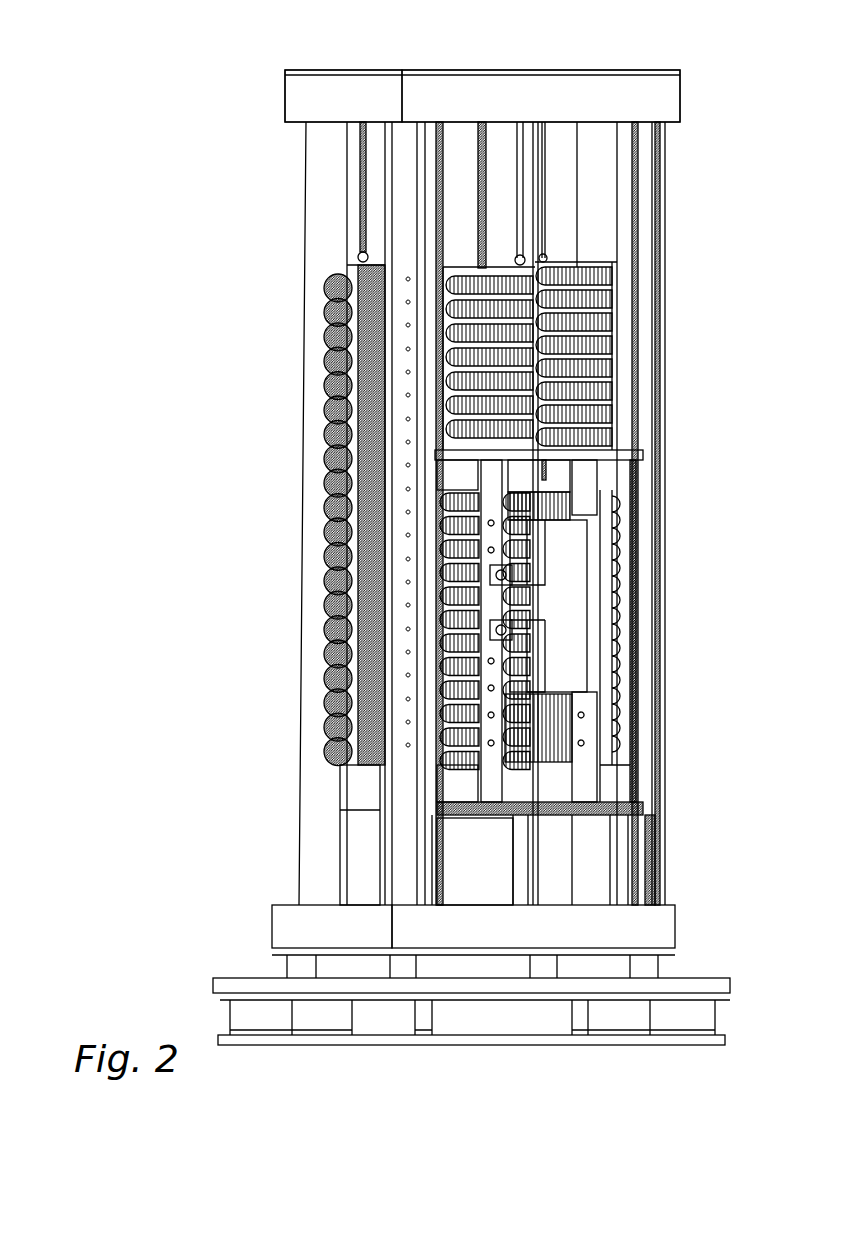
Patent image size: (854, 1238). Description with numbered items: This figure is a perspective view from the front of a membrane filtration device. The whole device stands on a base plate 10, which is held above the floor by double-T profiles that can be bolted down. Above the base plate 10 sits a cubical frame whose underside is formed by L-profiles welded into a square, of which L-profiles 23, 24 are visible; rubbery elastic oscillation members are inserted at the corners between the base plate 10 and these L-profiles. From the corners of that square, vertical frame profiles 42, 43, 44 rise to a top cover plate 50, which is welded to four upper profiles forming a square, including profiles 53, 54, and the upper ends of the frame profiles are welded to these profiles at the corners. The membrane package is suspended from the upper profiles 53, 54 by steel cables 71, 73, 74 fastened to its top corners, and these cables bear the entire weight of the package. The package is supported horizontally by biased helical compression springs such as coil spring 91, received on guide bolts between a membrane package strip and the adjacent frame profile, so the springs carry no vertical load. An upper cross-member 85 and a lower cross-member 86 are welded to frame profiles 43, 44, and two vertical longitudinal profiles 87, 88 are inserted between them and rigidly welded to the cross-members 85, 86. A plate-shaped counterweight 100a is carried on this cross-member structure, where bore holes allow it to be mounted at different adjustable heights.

The base plate 10 is at (680, 978).
The L-profile 23 is at (325, 924).
The L-profile 24 is at (587, 927).
The frame profile 42 is at (340, 735).
The frame profile 43 is at (400, 842).
The frame profile 44 is at (638, 857).
The top cover plate 50 is at (508, 70).
The profile 53 is at (312, 100).
The profile 54 is at (650, 100).
The steel cable 71 is at (542, 240).
The steel cable 73 is at (362, 210).
The steel cable 74 is at (520, 193).
The upper cross-member 85 is at (632, 490).
The lower cross-member 86 is at (615, 790).
The longitudinal profile 87 is at (587, 493).
The longitudinal profile 88 is at (497, 487).
The coil spring 91 is at (590, 702).
The counterweight 100a is at (570, 605).